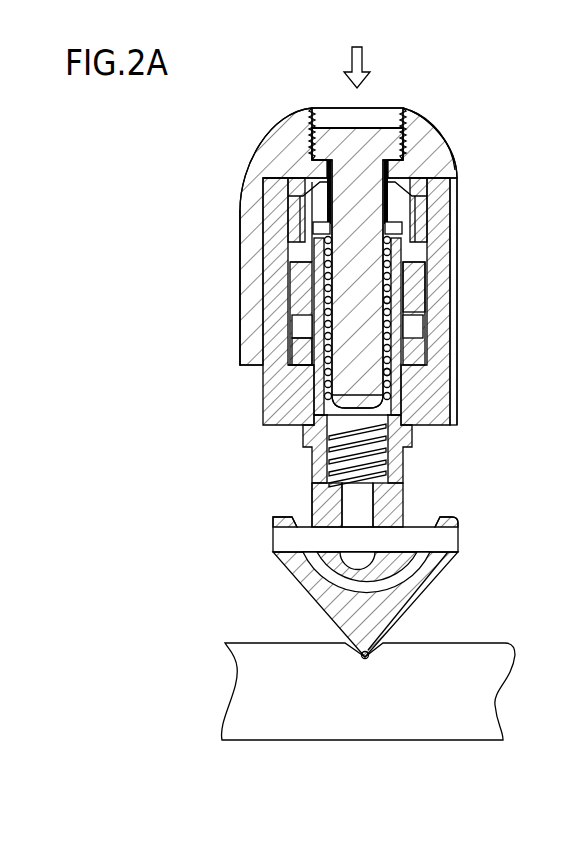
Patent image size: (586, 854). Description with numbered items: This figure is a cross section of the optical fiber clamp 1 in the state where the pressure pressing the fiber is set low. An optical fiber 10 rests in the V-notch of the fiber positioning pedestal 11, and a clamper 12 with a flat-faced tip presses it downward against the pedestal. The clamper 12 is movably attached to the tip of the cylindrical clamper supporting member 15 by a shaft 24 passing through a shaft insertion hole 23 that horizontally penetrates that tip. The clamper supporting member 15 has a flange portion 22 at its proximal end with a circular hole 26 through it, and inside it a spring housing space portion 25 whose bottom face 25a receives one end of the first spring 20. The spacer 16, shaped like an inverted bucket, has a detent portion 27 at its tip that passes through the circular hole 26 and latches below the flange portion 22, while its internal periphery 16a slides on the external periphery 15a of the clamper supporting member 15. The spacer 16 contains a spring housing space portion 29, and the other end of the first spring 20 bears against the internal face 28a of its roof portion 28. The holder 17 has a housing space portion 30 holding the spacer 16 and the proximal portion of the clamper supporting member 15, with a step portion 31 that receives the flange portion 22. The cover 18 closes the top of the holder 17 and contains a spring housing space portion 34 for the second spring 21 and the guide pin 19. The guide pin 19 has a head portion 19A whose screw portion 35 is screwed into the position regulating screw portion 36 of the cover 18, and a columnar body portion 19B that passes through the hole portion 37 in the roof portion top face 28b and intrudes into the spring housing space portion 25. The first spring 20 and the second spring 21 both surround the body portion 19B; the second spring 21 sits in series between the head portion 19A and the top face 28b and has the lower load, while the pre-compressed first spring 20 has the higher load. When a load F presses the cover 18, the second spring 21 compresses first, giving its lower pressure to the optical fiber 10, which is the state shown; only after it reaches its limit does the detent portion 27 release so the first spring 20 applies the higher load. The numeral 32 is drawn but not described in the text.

The optical fiber clamp 1 is at (554, 493).
The optical fiber 10 is at (365, 662).
The fiber positioning pedestal 11 is at (496, 648).
The clamper 12 is at (434, 582).
The clamper supporting member 15 is at (401, 504).
The external periphery 15a is at (300, 397).
The spacer 16 is at (393, 264).
The internal periphery 16a is at (392, 300).
The holder 17 is at (438, 402).
The cover 18 is at (254, 159).
The guide pin 19 is at (369, 129).
The head portion 19A is at (330, 140).
The body portion 19B is at (392, 356).
The first spring 20 is at (316, 458).
The second spring 21 is at (292, 190).
The flange portion 22 is at (262, 343).
The shaft insertion hole 23 is at (313, 510).
The shaft 24 is at (459, 537).
The spring housing space portion 25 is at (388, 447).
The bottom face 25a is at (380, 480).
The circular hole 26 is at (300, 324).
The detent portion 27 is at (292, 383).
The roof portion 28 is at (328, 230).
The internal face of the roof portion 28a is at (412, 250).
The roof portion top face 28b is at (404, 197).
The spring housing space portion 29 is at (395, 290).
The housing space portion 30 is at (300, 297).
The step portion 31 is at (402, 352).
The slide member upper end 32 is at (300, 275).
The spring housing space portion 34 is at (320, 214).
The screw portion 35 is at (445, 140).
The position regulating screw portion 36 is at (316, 110).
The hole portion 37 is at (396, 232).
The load F is at (365, 55).